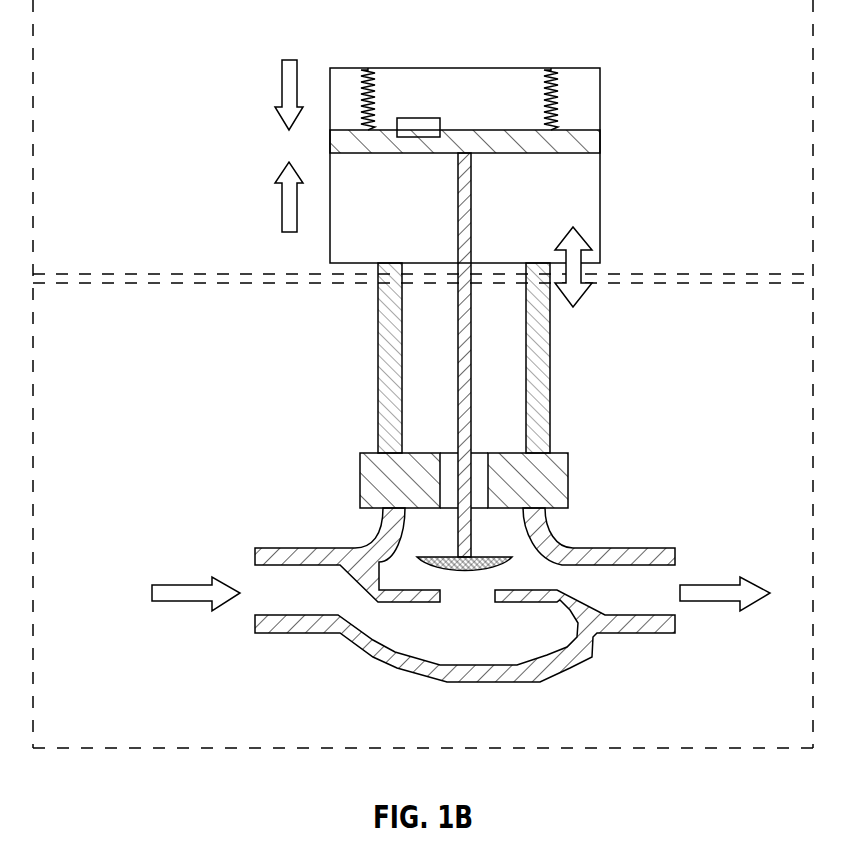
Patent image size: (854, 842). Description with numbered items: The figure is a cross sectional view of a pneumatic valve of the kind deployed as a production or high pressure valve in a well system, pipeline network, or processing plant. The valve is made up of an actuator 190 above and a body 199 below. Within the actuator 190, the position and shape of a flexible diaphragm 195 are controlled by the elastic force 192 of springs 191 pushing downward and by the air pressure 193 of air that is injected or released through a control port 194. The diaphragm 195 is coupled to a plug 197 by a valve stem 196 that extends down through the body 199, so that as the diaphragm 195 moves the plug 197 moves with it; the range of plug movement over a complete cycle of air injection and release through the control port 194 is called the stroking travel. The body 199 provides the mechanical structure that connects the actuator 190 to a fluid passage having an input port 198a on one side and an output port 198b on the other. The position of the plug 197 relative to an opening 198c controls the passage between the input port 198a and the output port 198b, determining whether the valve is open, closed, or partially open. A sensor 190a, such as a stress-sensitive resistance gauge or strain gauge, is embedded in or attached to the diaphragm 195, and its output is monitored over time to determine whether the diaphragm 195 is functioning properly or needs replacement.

The actuator 190 is at (717, 71).
The sensor 190a is at (423, 116).
The springs 191 is at (372, 66).
The elastic force 192 is at (280, 83).
The air pressure 193 is at (280, 216).
The control port 194 is at (585, 293).
The flexible diaphragm 195 is at (586, 139).
The valve stem 196 is at (465, 350).
The plug 197 is at (515, 556).
The input port 198a is at (274, 597).
The output port 198b is at (665, 600).
The opening 198c is at (472, 619).
The body 199 is at (743, 377).